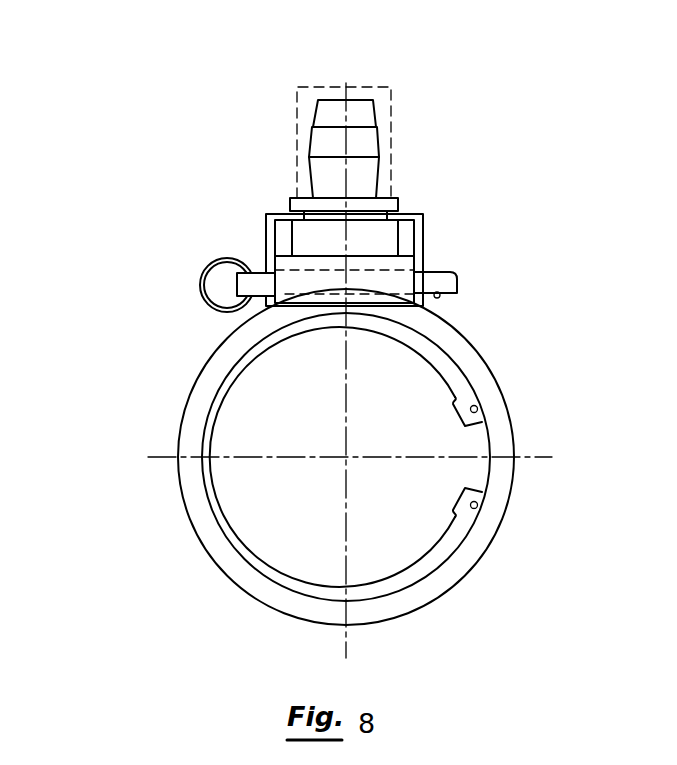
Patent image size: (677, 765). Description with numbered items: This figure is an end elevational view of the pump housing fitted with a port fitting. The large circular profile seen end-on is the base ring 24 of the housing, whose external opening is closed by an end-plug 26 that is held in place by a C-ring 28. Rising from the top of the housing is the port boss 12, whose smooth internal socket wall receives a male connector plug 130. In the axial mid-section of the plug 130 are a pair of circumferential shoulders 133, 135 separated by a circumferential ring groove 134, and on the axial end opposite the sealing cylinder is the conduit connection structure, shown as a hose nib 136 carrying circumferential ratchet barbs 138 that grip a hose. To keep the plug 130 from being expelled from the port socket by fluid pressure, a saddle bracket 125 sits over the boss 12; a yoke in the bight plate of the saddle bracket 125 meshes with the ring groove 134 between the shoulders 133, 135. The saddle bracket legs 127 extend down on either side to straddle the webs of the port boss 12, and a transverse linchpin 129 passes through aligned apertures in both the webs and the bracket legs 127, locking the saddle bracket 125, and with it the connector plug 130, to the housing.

The boss 12 is at (400, 260).
The base ring 24 is at (485, 378).
The end-plug 26 is at (298, 412).
The C-ring 28 is at (267, 566).
The saddle bracket 125 is at (263, 226).
The saddle bracket legs 127 is at (262, 246).
The transverse linchpin 129 is at (447, 297).
The male connector plug 130 is at (304, 160).
The circumferential shoulder 133 is at (388, 236).
The circumferential ring groove 134 is at (376, 213).
The circumferential shoulder 135 is at (324, 203).
The hose nib 136 is at (352, 105).
The circumferential ratchet barbs 138 is at (313, 128).